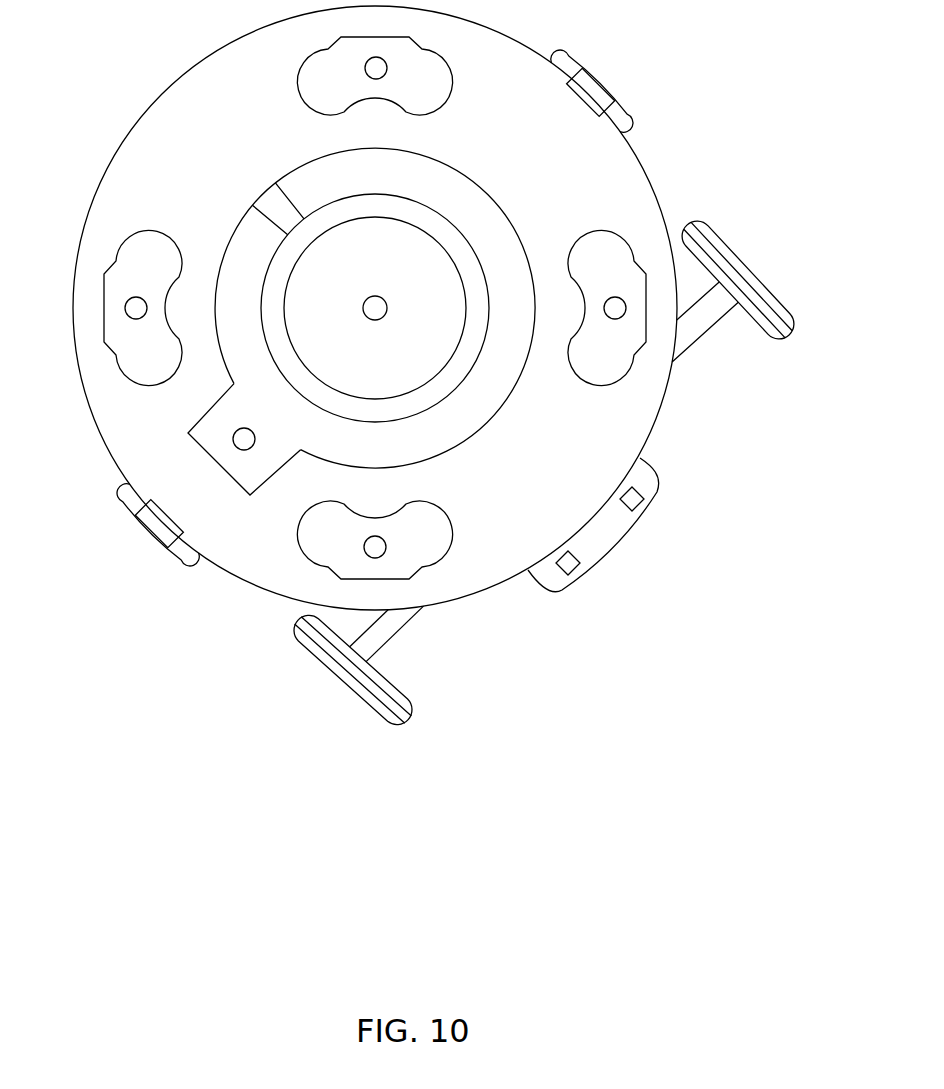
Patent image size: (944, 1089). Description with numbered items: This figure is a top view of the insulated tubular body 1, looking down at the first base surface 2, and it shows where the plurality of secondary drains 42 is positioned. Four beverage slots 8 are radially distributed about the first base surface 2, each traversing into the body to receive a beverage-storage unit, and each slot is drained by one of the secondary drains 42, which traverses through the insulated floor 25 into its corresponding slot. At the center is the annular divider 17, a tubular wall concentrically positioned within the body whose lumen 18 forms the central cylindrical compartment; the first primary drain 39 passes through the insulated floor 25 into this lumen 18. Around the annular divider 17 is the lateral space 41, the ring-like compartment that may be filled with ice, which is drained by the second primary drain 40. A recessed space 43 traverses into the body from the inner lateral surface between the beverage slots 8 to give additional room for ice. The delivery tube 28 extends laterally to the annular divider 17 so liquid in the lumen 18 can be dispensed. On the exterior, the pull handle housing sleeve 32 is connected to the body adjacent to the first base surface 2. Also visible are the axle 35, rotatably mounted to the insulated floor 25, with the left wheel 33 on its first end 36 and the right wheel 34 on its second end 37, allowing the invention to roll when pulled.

The insulated tubular body 1 is at (66, 224).
The first base surface 2 is at (220, 152).
The plurality of beverage slots 8 is at (424, 91).
The annular divider 17 is at (283, 299).
The lumen 18 is at (385, 229).
The insulated floor 25 is at (342, 95).
The delivery tube 28 is at (283, 206).
The pull handle housing sleeve 32 is at (613, 540).
The left wheel 33 is at (740, 275).
The right wheel 34 is at (340, 676).
The axle 35 is at (406, 621).
The first end 36 is at (723, 296).
The second end 37 is at (366, 650).
The first primary drain 39 is at (377, 316).
The second primary drain 40 is at (244, 434).
The lateral space 41 is at (489, 392).
The plurality of secondary drains 42 is at (379, 76).
The at least one recessed space 43 is at (249, 474).